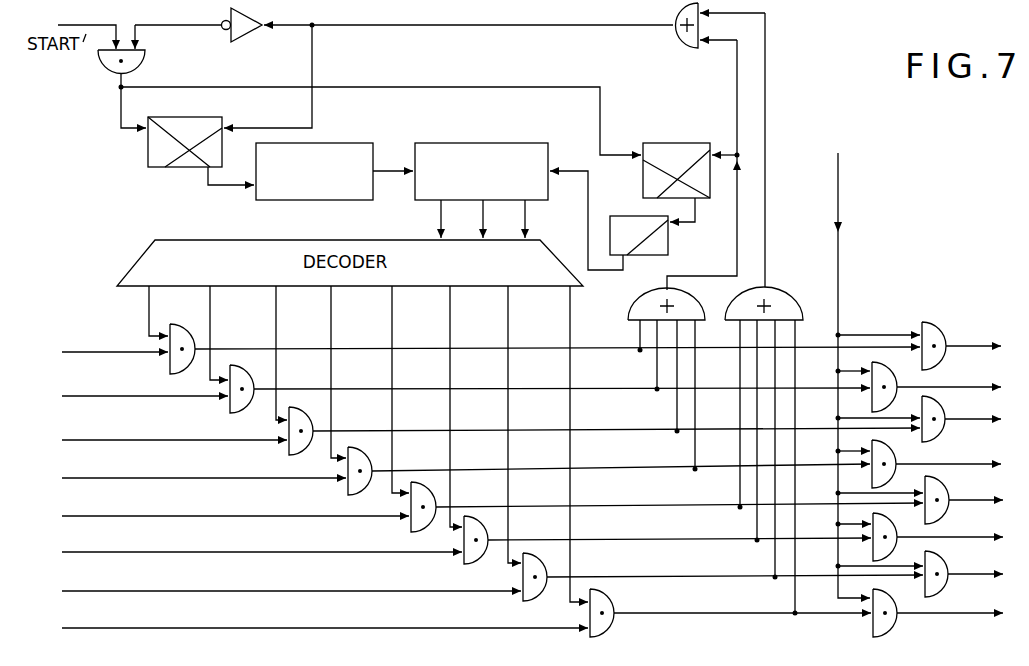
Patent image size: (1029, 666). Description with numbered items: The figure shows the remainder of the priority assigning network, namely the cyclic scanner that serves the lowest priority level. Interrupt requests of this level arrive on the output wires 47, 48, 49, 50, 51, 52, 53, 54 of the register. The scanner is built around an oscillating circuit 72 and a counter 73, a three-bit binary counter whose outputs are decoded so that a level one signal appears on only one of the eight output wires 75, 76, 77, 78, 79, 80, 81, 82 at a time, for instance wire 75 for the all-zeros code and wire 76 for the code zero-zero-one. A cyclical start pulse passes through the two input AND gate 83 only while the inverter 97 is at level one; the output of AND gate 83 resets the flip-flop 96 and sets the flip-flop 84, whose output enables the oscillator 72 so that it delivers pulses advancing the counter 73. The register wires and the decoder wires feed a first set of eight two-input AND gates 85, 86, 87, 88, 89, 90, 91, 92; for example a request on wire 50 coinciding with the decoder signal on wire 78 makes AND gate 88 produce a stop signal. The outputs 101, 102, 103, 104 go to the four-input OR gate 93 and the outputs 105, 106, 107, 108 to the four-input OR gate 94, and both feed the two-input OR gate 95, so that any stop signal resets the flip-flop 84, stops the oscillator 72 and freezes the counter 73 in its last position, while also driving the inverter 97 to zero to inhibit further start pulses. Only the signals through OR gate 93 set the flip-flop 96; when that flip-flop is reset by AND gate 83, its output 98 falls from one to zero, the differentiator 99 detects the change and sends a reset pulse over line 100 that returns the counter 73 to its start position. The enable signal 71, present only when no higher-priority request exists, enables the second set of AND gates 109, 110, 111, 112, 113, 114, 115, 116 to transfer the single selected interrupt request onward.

The output wire 47 is at (98, 352).
The output wire 48 is at (98, 396).
The output wire 49 is at (98, 440).
The output wire 50 is at (98, 478).
The output wire 51 is at (98, 516).
The output wire 52 is at (100, 552).
The output wire 53 is at (103, 591).
The output wire 54 is at (105, 628).
The ENABLE signal output 71 is at (840, 185).
The oscillating circuit 72 is at (296, 201).
The counter 73 is at (427, 201).
The output wire 75 is at (147, 304).
The output wire 76 is at (209, 315).
The output wire 77 is at (275, 316).
The output wire 78 is at (330, 316).
The output wire 79 is at (391, 316).
The output wire 80 is at (449, 316).
The output wire 81 is at (507, 316).
The output wire 82 is at (569, 316).
The two input AND gate 83 is at (143, 59).
The flip-flop 84 is at (184, 170).
The two-input AND gate 85 is at (168, 364).
The two-input AND gate 86 is at (228, 404).
The two-input AND gate 87 is at (287, 444).
The two-input AND gate 88 is at (346, 484).
The two-input AND gate 89 is at (409, 524).
The two-input AND gate 90 is at (462, 562).
The two-input AND gate 91 is at (521, 600).
The two-input AND gate 92 is at (588, 638).
The four-input OR gate 93 is at (628, 311).
The four-input OR gate 94 is at (789, 297).
The two-input OR gate 95 is at (669, 40).
The flip-flop 96 is at (693, 142).
The inverter 97 is at (246, 43).
The output of the flip-flop 98 is at (696, 210).
The differentiator 99 is at (633, 216).
The line 100 is at (588, 218).
The output 101 is at (619, 349).
The output 102 is at (625, 389).
The output 103 is at (625, 430).
The output 104 is at (625, 469).
The output 105 is at (625, 506).
The output 106 is at (627, 540).
The output 107 is at (629, 576).
The output 108 is at (675, 612).
The AND gate 109 is at (945, 343).
The AND gate 110 is at (897, 383).
The AND gate 111 is at (945, 416).
The AND gate 112 is at (897, 455).
The AND gate 113 is at (945, 490).
The AND gate 114 is at (898, 528).
The AND gate 115 is at (947, 564).
The AND gate 116 is at (898, 604).